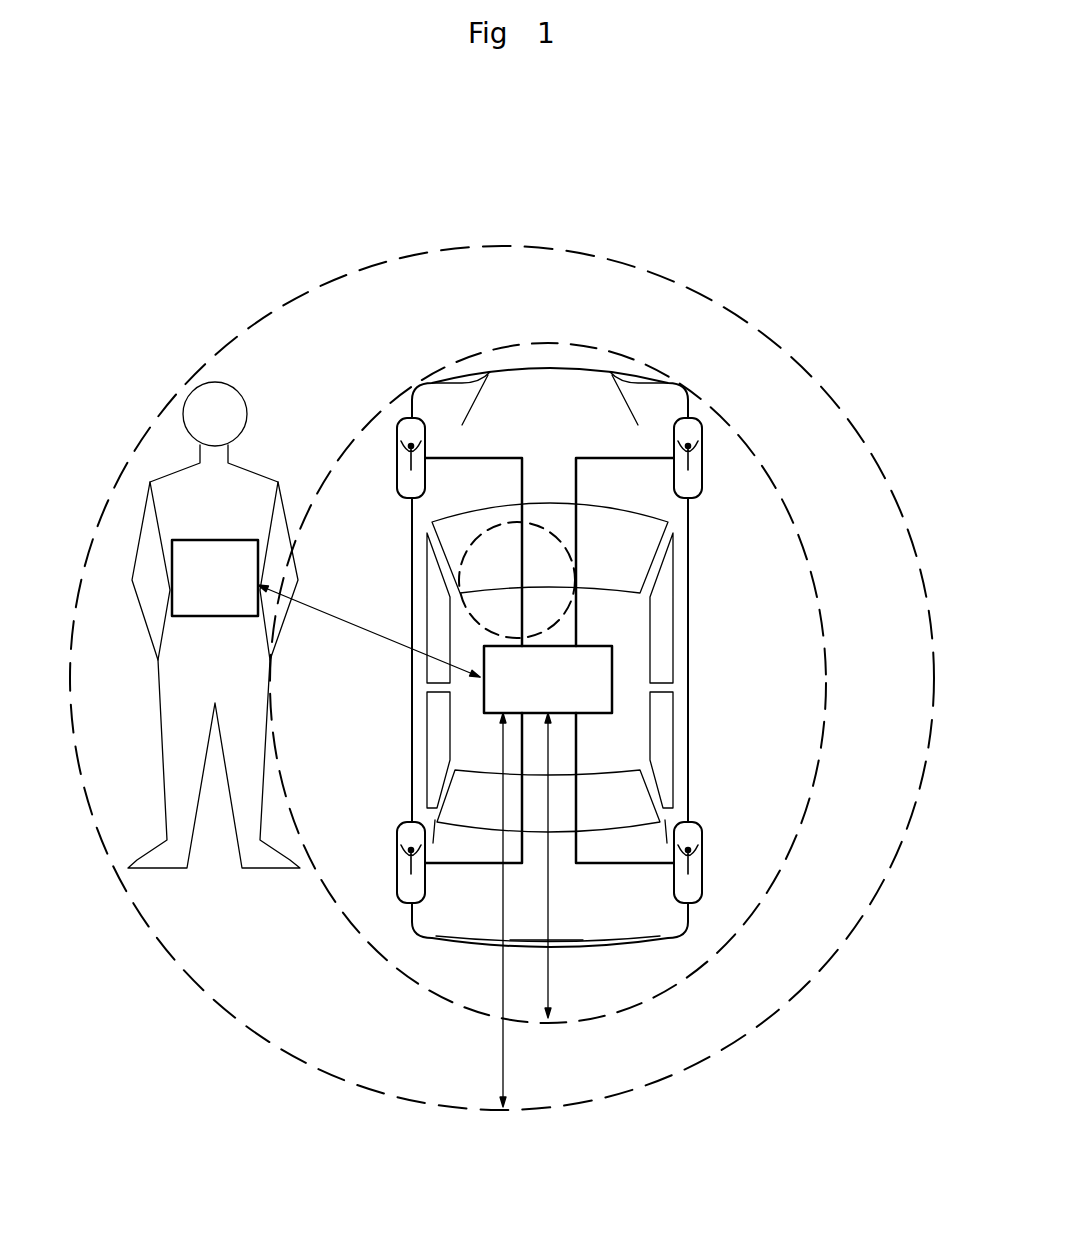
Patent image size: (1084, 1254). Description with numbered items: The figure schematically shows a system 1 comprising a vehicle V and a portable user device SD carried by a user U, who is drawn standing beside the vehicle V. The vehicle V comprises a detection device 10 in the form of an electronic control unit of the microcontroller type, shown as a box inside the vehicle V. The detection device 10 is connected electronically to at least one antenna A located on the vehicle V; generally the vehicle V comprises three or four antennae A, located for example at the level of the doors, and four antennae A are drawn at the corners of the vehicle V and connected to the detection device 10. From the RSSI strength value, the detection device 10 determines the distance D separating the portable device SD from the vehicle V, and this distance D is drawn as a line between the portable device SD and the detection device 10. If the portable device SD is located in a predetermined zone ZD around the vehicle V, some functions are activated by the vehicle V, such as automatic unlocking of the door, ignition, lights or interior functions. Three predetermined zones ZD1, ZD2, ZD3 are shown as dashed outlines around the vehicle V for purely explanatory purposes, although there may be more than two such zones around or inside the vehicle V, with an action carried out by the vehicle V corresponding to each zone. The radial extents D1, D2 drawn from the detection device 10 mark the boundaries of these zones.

The system 1 is at (316, 207).
The vehicle V is at (552, 368).
The antenna A is at (398, 430).
The detection device 10 is at (583, 677).
The user U is at (198, 413).
The portable user device SD is at (180, 567).
The distance D is at (369, 631).
The first distance threshold D1 is at (567, 865).
The second distance threshold D2 is at (485, 910).
The predetermined zone ZD is at (752, 322).
The first predetermined zone ZD1 is at (652, 993).
The second predetermined zone ZD2 is at (630, 263).
The third predetermined zone ZD3 is at (541, 527).